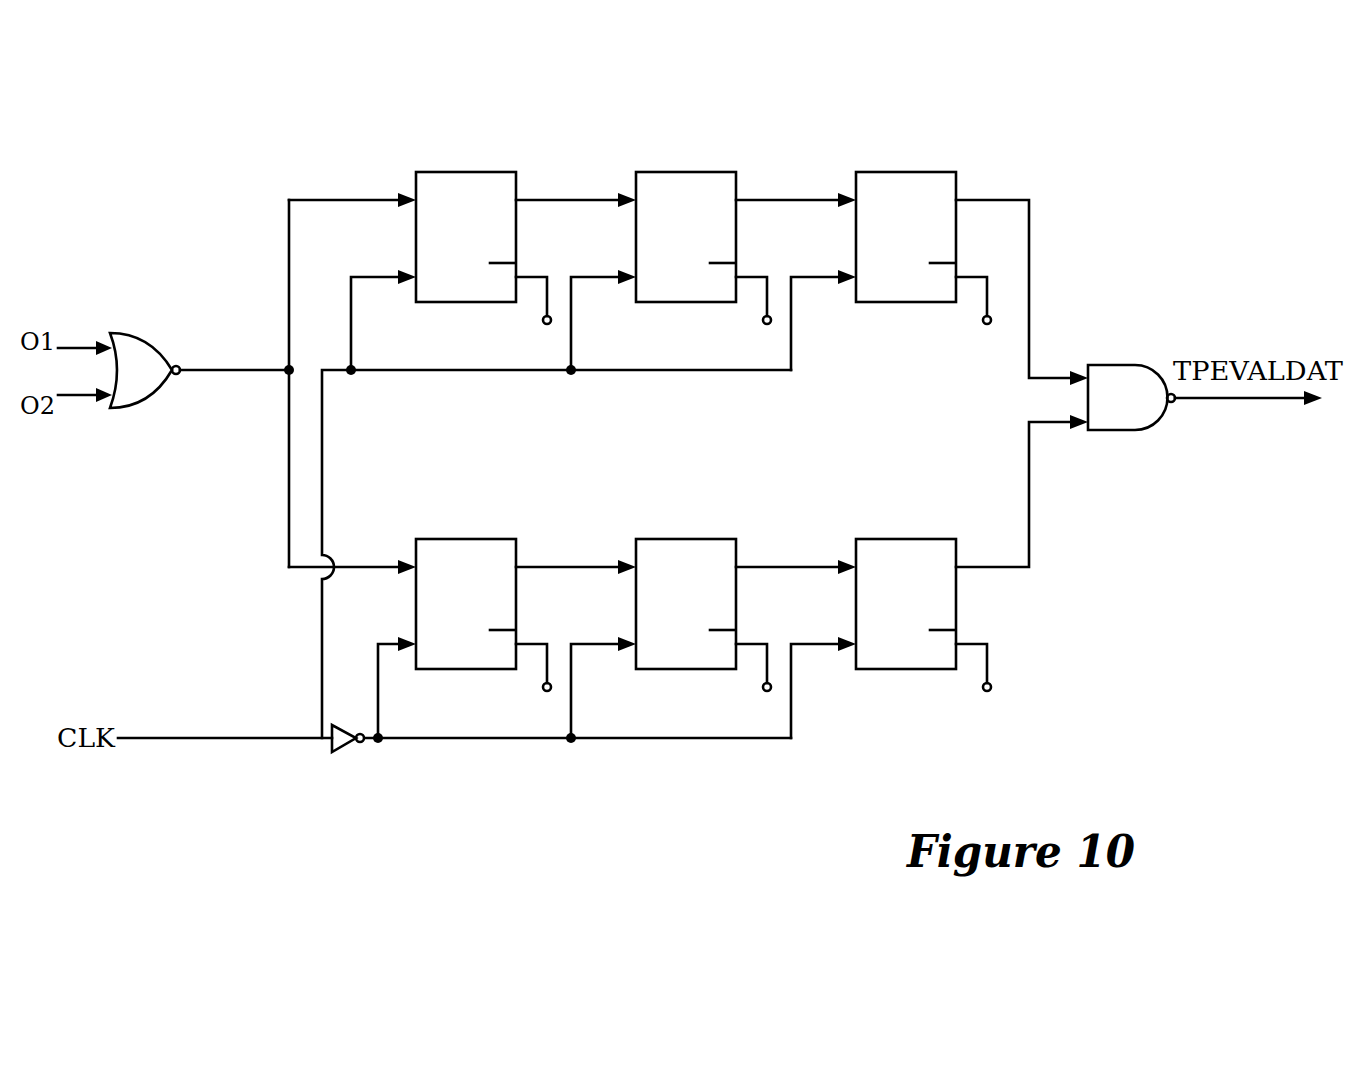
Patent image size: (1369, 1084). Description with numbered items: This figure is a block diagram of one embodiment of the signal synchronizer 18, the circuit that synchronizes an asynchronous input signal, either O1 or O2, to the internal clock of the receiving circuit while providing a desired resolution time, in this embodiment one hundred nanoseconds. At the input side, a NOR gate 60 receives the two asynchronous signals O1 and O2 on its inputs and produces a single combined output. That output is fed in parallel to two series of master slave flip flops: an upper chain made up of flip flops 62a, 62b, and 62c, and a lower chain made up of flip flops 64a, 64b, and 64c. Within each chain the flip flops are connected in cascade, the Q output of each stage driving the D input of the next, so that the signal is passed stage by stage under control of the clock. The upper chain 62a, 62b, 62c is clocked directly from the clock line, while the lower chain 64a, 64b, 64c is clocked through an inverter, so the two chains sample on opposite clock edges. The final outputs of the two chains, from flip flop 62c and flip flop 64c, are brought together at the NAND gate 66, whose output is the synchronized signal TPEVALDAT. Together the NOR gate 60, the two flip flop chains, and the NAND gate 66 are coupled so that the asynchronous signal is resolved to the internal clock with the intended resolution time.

The signal synchronizer 18 is at (1153, 704).
The NOR gate 60 is at (147, 331).
The master slave flip flop 62a is at (445, 162).
The master slave flip flop 62b is at (665, 162).
The master slave flip flop 62c is at (885, 162).
The master slave flip flop 64a is at (445, 529).
The master slave flip flop 64b is at (665, 529).
The master slave flip flop 64c is at (885, 529).
The NAND gate 66 is at (1110, 360).